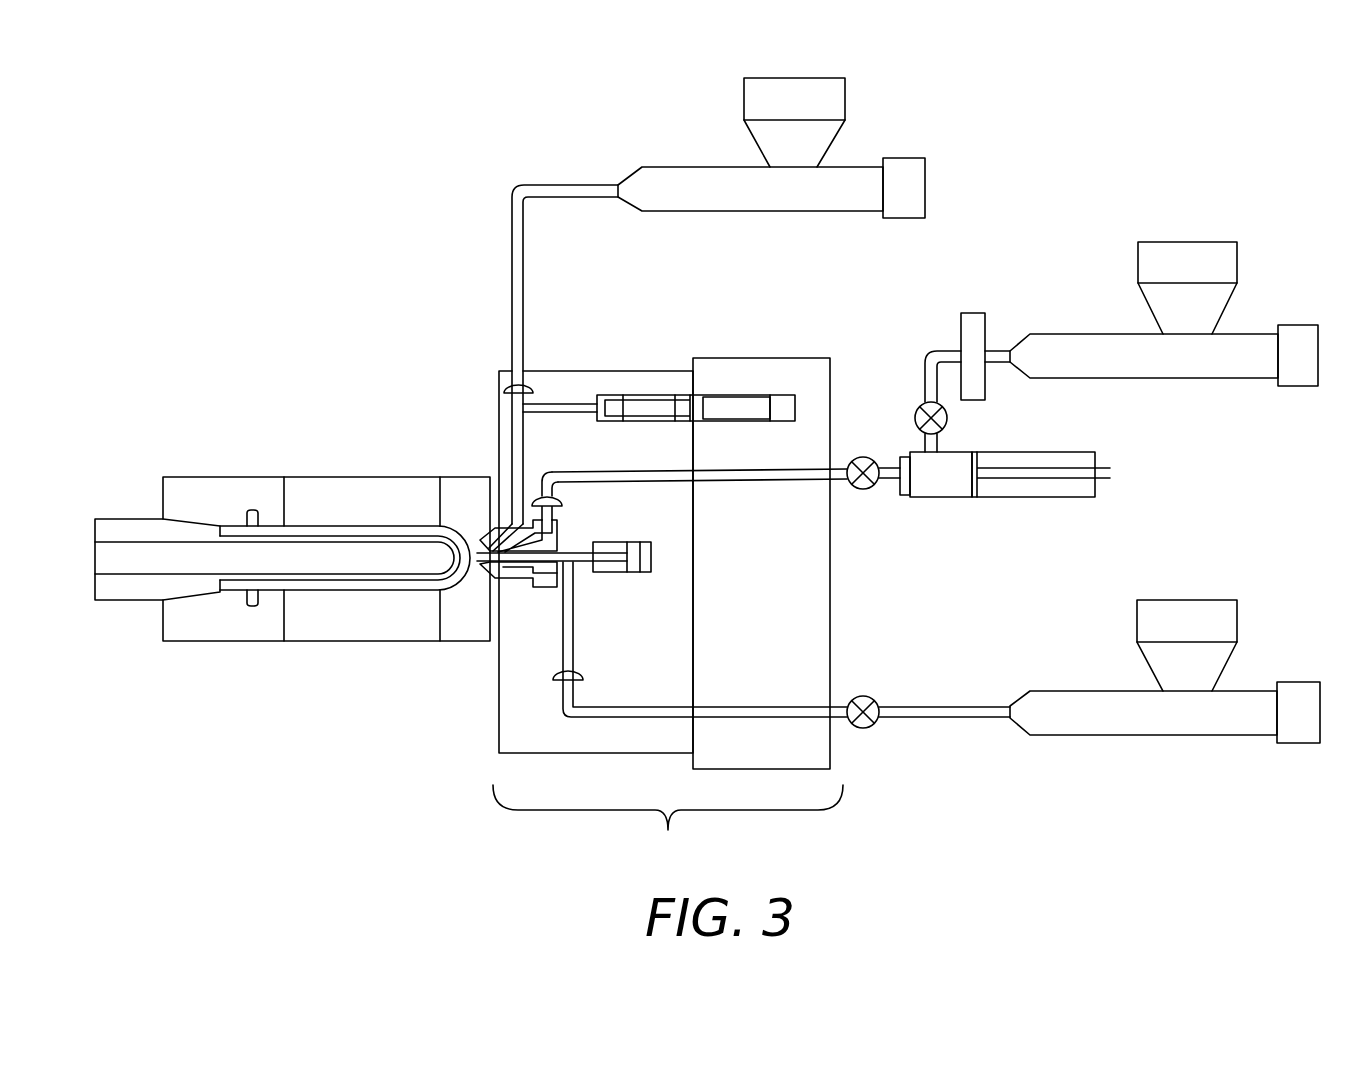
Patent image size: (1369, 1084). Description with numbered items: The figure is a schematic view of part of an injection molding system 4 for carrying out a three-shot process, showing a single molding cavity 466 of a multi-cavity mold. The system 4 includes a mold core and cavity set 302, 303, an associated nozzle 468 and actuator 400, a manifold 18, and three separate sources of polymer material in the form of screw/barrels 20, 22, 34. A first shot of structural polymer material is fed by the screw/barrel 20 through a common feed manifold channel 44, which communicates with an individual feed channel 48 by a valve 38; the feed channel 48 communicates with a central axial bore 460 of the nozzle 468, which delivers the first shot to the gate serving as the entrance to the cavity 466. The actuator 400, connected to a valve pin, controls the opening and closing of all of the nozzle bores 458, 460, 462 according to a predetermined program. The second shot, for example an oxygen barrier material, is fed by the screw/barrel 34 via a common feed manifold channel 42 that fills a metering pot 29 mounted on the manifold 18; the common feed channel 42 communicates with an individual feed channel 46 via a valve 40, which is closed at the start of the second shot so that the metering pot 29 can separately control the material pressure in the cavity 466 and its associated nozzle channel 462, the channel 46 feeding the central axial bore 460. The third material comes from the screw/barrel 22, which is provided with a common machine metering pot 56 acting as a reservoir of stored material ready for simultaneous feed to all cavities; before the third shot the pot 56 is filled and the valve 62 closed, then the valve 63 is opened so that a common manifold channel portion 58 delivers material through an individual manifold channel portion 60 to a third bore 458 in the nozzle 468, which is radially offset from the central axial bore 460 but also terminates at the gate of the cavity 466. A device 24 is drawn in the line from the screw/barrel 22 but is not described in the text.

The system 4 is at (380, 175).
The manifold 18 is at (668, 610).
The screw/barrel 20 is at (1070, 691).
The screw/barrel 22 is at (1120, 378).
The melt pressure regulator 24 is at (973, 313).
The metering pot 29 is at (623, 395).
The screw/barrel 34 is at (705, 212).
The valve 38 is at (555, 675).
The valve 40 is at (533, 390).
The common feed manifold channel 42 is at (512, 240).
The common feed manifold channel 44 is at (800, 707).
The individual feed channel 46 is at (527, 470).
The individual feed channel 48 is at (573, 610).
The machine metering pot 56 is at (950, 497).
The common manifold channel portion 58 is at (712, 472).
The individual manifold channel portion 60 is at (558, 497).
The valve 62 is at (915, 412).
The valve 63 is at (863, 490).
The mold core 302 is at (160, 525).
The mold cavity set 303 is at (271, 486).
The actuator 400 is at (656, 538).
The third bore 458 is at (528, 585).
The central axial bore 460 is at (585, 548).
The nozzle channel 462 is at (502, 515).
The molding cavity 466 is at (307, 580).
The nozzle 468 is at (483, 532).